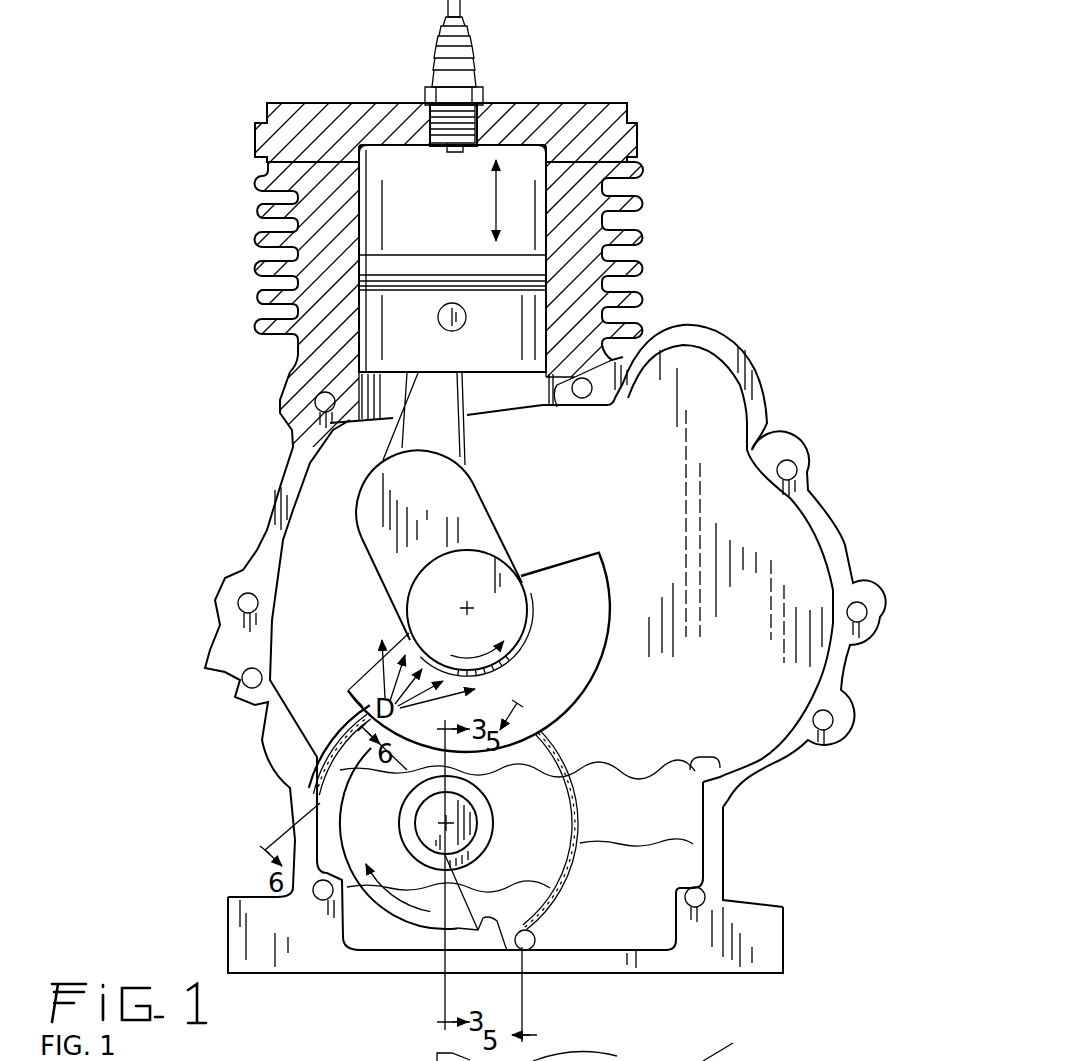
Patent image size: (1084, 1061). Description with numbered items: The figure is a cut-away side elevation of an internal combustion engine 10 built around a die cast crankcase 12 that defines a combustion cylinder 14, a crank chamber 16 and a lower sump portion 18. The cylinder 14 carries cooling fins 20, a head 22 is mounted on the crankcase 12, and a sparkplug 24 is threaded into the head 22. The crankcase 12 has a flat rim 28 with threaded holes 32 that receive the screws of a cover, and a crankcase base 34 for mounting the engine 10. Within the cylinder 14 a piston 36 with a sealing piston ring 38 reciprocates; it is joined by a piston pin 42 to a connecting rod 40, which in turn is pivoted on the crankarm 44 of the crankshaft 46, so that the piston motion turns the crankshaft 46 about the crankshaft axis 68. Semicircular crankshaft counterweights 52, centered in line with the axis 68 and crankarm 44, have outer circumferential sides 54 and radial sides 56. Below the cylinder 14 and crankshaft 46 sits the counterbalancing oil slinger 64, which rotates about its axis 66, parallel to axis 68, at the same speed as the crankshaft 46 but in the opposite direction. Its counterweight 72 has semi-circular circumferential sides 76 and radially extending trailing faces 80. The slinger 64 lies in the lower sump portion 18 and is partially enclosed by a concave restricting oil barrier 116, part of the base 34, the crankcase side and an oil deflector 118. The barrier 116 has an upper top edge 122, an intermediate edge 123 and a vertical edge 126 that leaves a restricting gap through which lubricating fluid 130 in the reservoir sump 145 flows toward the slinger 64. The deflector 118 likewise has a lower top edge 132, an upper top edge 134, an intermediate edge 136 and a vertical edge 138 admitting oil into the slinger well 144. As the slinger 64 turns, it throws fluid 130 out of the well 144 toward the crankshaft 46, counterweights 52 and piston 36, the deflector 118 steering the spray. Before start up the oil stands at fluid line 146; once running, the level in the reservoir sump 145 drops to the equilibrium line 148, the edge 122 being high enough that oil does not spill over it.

The internal combustion engine 10 is at (712, 125).
The crankcase 12 is at (748, 362).
The combustion cylinder 14 is at (355, 212).
The crank chamber 16 is at (355, 492).
The lower sump portion 18 is at (622, 752).
The cooling fins 20 is at (628, 242).
The head 22 is at (560, 128).
The sparkplug 24 is at (440, 44).
The flat rim 28 is at (766, 448).
The threaded holes 32 is at (313, 400).
The crankcase base 34 is at (708, 958).
The piston 36 is at (412, 352).
The piston ring 38 is at (357, 278).
The connecting rod 40 is at (449, 427).
The piston pin 42 is at (455, 318).
The crankarm 44 is at (435, 501).
The crankshaft 46 is at (480, 589).
The crankshaft counterweights 52 is at (584, 606).
The outer circumferential sides 54 is at (347, 697).
The radial sides 56 is at (598, 553).
The counterbalancing oil slinger 64 is at (572, 878).
The counterbalancing oil slinger axis 66 is at (445, 823).
The crankshaft axis 68 is at (465, 607).
The counterweight 72 is at (372, 920).
The semi-circular circumferential sides 76 is at (413, 930).
The trailing faces 80 is at (488, 930).
The restricting oil barrier 116 is at (592, 822).
The oil deflector 118 is at (312, 767).
The upper top edge 122 is at (566, 740).
The intermediate edge 123 is at (590, 737).
The vertical edge 126 is at (560, 900).
The lubricating fluid 130 is at (652, 884).
The lower top edge 132 is at (328, 754).
The upper top edge 134 is at (342, 722).
The intermediate edge 136 is at (340, 742).
The vertical edge 138 is at (318, 794).
The slinger well 144 is at (531, 914).
The reservoir sump 145 is at (645, 932).
The lubricating fluid line 146 is at (702, 758).
The equilibrium level line 148 is at (693, 843).